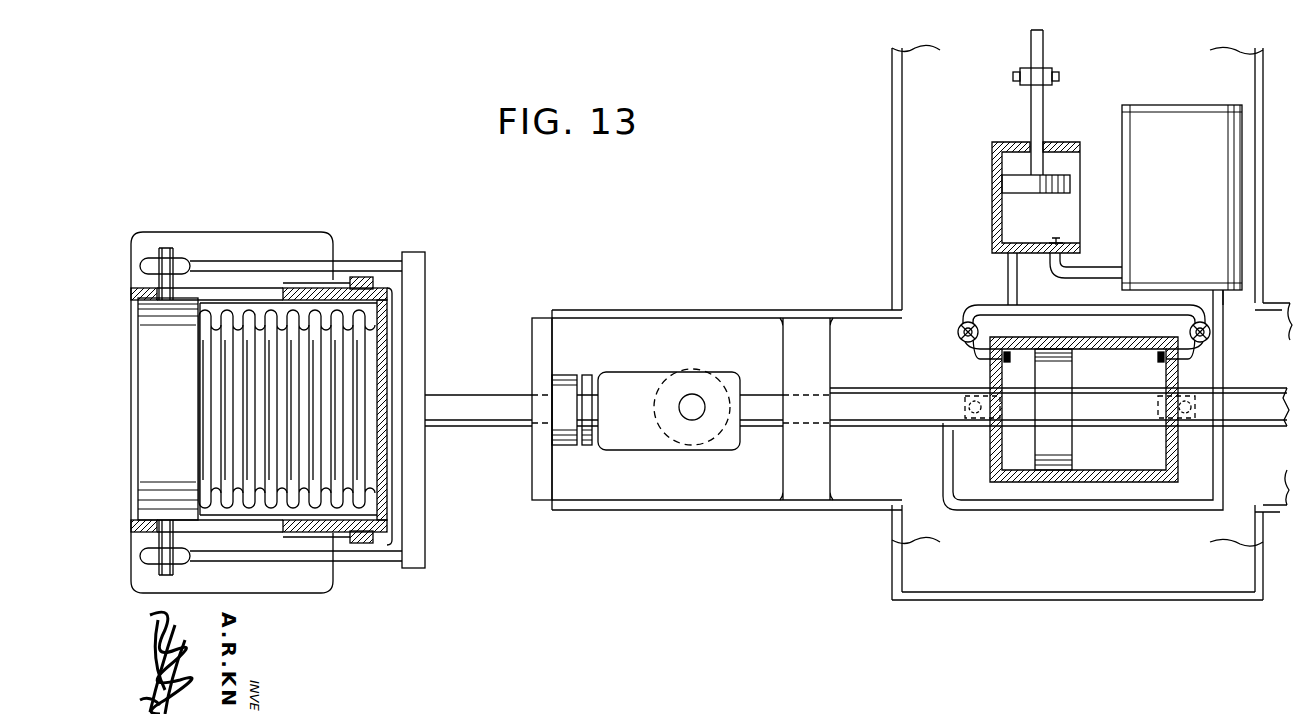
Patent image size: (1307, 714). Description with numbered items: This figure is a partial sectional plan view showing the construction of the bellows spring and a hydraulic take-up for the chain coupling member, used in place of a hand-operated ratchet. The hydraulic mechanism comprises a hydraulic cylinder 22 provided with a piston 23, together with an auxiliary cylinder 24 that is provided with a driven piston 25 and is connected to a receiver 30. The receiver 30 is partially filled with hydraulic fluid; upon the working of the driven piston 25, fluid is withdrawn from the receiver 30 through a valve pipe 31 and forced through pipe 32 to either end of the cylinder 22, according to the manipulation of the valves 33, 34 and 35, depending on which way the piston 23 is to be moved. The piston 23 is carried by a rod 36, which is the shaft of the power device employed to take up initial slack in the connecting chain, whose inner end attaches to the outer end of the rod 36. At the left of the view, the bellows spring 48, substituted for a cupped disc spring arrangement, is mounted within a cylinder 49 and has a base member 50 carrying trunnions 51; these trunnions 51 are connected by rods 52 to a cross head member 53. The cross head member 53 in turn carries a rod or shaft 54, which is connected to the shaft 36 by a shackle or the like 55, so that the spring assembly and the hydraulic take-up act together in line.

The hydraulic cylinder 22 is at (1133, 381).
The piston 23 is at (1062, 438).
The auxiliary cylinder 24 is at (1048, 227).
The driven piston 25 is at (1000, 187).
The receiver 30 is at (1193, 199).
The valve pipe 31 is at (1083, 272).
The pipe 32 is at (1008, 290).
The valve 33 is at (957, 334).
The valve 34 is at (1212, 336).
The valve 35 is at (966, 402).
The rod 36 is at (915, 428).
The bellows spring 48 is at (345, 352).
The cylinder 49 is at (335, 290).
The base member 50 is at (178, 411).
The trunnions 51 is at (165, 252).
The rods 52 is at (243, 268).
The cross head member 53 is at (415, 375).
The rod or shaft 54 is at (470, 405).
The shackle 55 is at (645, 440).